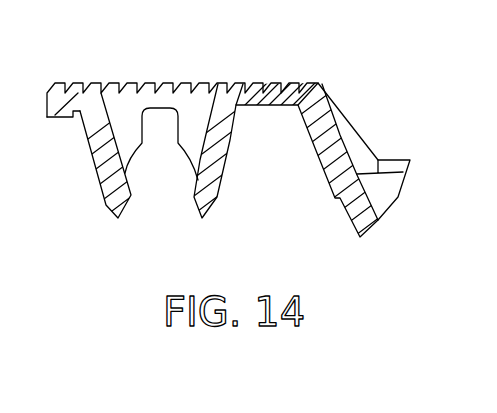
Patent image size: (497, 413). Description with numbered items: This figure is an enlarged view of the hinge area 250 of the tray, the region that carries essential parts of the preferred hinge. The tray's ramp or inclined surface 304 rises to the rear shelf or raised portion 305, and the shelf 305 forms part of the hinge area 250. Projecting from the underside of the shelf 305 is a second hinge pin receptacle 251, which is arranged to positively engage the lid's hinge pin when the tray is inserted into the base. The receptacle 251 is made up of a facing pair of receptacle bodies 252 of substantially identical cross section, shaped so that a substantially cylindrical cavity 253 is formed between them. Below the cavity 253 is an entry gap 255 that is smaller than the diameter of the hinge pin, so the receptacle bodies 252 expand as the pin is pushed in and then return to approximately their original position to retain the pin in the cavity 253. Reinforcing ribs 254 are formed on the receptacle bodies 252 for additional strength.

The hinge area 250 is at (231, 157).
The second hinge pin receptacle 251 is at (333, 182).
The receptacle bodies 252 is at (102, 170).
The substantially cylindrical cavity 253 is at (162, 162).
The reinforcing ribs 254 is at (197, 112).
The entry gap 255 is at (157, 218).
The ramp or inclined surface 304 is at (328, 140).
The rear shelf or raised portion 305 is at (278, 82).